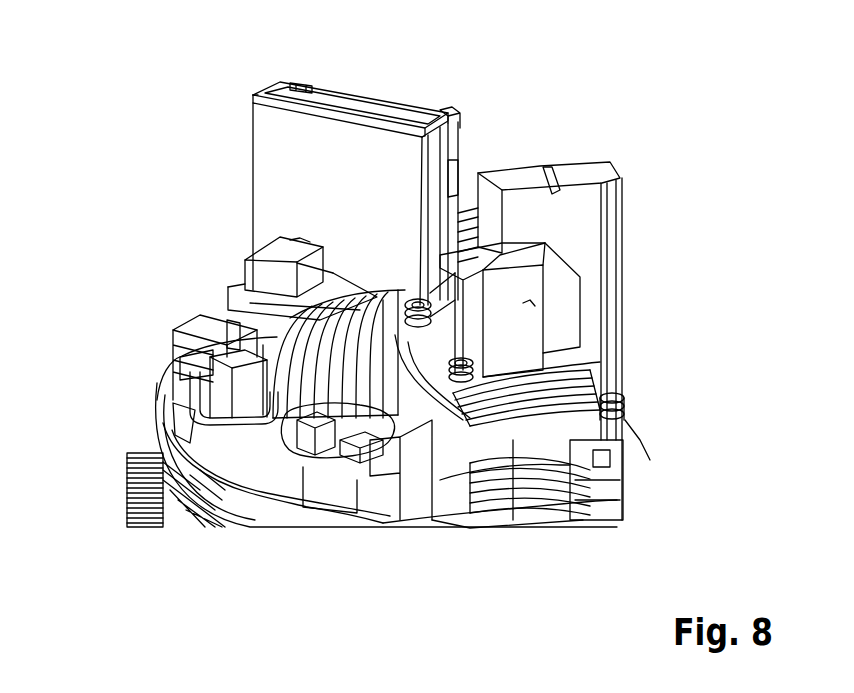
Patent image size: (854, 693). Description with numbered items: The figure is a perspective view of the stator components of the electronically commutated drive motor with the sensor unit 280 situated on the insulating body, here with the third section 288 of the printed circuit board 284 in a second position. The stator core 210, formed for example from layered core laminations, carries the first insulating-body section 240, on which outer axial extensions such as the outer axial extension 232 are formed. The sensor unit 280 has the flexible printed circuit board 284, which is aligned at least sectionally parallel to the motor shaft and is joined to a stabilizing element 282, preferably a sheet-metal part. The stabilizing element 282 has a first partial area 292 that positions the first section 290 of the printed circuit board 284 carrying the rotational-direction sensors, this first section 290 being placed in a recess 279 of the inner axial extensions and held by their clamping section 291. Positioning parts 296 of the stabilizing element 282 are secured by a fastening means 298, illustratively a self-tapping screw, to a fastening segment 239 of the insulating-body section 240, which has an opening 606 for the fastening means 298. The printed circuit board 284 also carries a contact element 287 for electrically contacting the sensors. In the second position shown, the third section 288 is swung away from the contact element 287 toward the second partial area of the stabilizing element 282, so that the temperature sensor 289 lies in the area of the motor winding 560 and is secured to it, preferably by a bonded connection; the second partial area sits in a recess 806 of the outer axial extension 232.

The sensor unit 280 is at (137, 160).
The stabilizing element 282 is at (270, 119).
The printed circuit board 284 is at (273, 92).
The contact element 287 is at (436, 112).
The first insulating-body section 240 is at (597, 172).
The recess 806 is at (299, 232).
The outer axial extension 232 is at (243, 243).
The third section 288 is at (265, 292).
The temperature sensor 289 is at (290, 322).
The opening 606 is at (527, 303).
The fastening segment 239 is at (580, 283).
The stator core 210 is at (547, 353).
The first section 290 is at (600, 385).
The fastening means 298 is at (620, 403).
The positioning part 296 is at (633, 417).
The motor winding 560 is at (310, 360).
The recess 279 is at (468, 453).
The first partial area 292 is at (475, 463).
The clamping section 291 is at (583, 520).